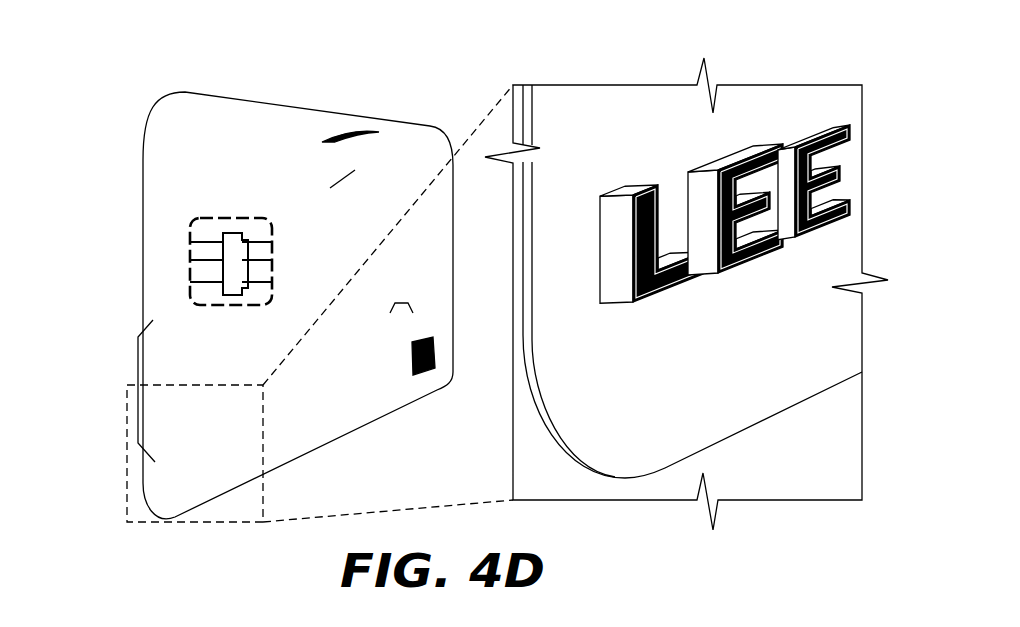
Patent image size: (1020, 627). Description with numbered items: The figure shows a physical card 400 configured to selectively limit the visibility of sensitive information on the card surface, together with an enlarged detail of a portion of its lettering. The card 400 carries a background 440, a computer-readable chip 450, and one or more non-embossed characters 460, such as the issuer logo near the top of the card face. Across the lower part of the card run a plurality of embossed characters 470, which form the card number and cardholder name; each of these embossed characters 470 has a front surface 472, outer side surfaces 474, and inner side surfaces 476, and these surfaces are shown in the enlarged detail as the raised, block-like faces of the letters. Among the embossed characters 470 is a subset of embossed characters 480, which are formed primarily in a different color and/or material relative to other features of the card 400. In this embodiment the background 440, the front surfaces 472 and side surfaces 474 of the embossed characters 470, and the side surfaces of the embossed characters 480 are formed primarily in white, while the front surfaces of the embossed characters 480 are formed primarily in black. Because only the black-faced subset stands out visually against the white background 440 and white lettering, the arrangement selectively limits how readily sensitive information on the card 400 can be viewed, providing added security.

The physical card 400 is at (432, 83).
The background 440 is at (444, 255).
The computer-readable chip 450 is at (190, 233).
The non-embossed characters 460 is at (385, 140).
The embossed characters 470 is at (127, 386).
The front surfaces 472 is at (188, 452).
The outer side surfaces 474 is at (172, 457).
The inner side surfaces 476 is at (187, 438).
The embossed characters 480 is at (400, 303).